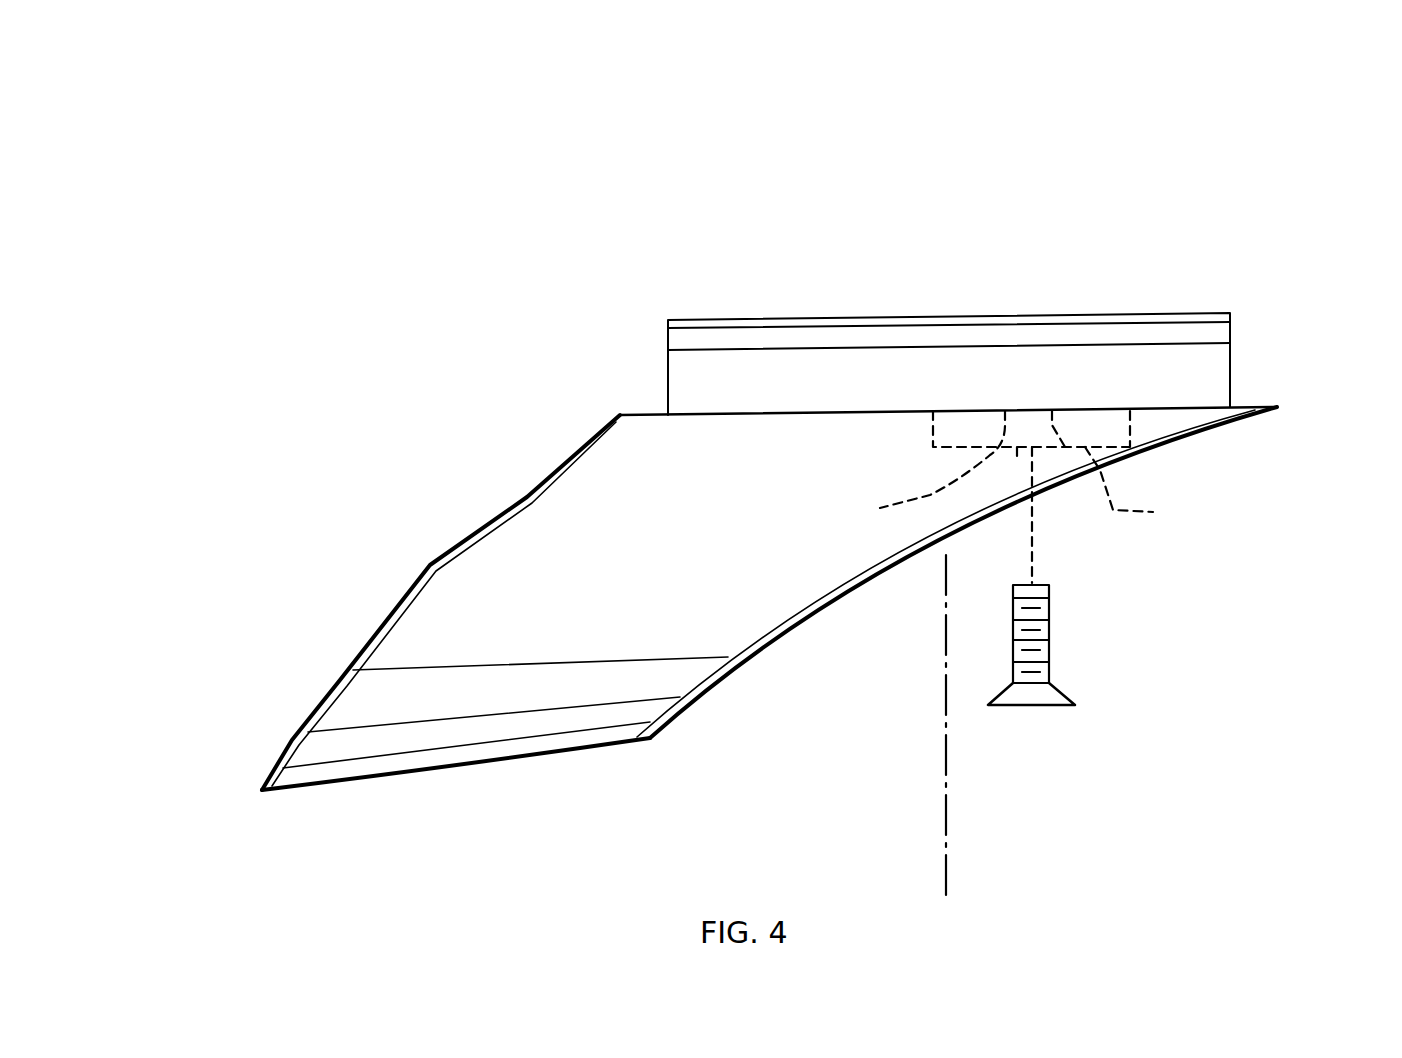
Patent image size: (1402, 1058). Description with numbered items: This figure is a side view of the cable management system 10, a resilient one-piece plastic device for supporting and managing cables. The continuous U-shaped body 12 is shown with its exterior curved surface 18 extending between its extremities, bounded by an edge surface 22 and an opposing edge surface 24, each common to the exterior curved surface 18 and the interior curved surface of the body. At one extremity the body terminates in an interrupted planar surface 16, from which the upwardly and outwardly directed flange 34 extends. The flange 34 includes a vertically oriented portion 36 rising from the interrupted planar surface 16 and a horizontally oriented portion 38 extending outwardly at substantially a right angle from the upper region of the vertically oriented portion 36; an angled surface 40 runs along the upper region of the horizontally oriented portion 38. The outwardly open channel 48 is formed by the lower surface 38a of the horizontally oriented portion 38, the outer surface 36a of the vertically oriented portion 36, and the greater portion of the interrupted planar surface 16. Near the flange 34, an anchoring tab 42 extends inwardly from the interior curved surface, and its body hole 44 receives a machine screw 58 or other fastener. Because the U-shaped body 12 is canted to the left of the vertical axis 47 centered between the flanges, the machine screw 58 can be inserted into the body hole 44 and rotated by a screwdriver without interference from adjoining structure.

The cable management system 10 is at (548, 208).
The U-shaped body 12 is at (530, 757).
The interrupted planar surface 16 is at (1257, 404).
The exterior curved surface 18 is at (712, 563).
The edge surface 22 is at (430, 565).
The edge surface 24 is at (710, 687).
The flange 34 is at (1215, 308).
The vertically oriented portion 36 is at (710, 393).
The outer surface 36a is at (907, 378).
The horizontally oriented portion 38 is at (690, 344).
The lower surface 38a is at (1160, 343).
The angled surface 40 is at (910, 323).
The anchoring tab 42 is at (1125, 471).
The body hole 44 is at (987, 469).
The vertical axis 47 is at (948, 793).
The channel 48 is at (863, 377).
The machine screw 58 is at (1049, 627).